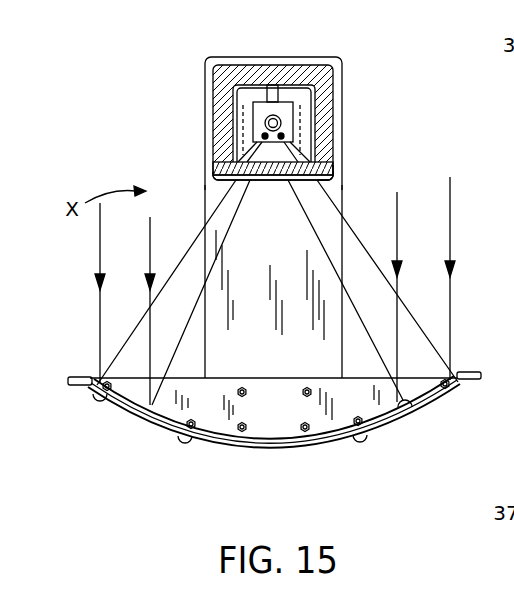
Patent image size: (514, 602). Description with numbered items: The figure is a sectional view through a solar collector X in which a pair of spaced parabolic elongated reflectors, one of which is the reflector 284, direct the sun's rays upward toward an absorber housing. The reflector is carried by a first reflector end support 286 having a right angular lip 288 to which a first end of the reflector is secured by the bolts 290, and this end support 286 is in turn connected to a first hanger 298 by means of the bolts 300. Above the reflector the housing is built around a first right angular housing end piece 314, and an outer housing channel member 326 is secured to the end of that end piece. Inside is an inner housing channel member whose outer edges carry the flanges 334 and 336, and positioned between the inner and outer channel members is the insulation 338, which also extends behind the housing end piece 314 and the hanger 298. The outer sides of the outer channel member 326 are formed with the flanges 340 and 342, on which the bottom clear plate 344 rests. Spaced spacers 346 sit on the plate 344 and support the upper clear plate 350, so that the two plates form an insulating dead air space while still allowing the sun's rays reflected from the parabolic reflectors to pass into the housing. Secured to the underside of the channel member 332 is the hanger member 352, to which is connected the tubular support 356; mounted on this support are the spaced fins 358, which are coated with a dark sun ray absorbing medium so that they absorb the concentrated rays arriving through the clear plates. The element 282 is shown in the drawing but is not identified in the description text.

The mounting dome 282 is at (401, 408).
The parabolic elongated reflector 284 is at (137, 404).
The first reflector end support 286 is at (215, 402).
The right angular lip 288 is at (163, 416).
The bolts 290 is at (98, 402).
The first hanger 298 is at (207, 220).
The bolts 300 is at (301, 421).
The first right angular housing end piece 314 is at (302, 57).
The outer housing channel member 326 is at (207, 128).
The channel member 332 is at (320, 105).
The flange 334 is at (215, 145).
The flange 336 is at (333, 153).
The insulation 338 is at (213, 70).
The flange 340 is at (254, 182).
The flange 342 is at (335, 186).
The bottom clear plate 344 is at (289, 180).
The spacers 346 is at (230, 180).
The upper clear plate 350 is at (255, 108).
The hanger member 352 is at (283, 100).
The tubular support 356 is at (258, 100).
The fins 358 is at (295, 122).